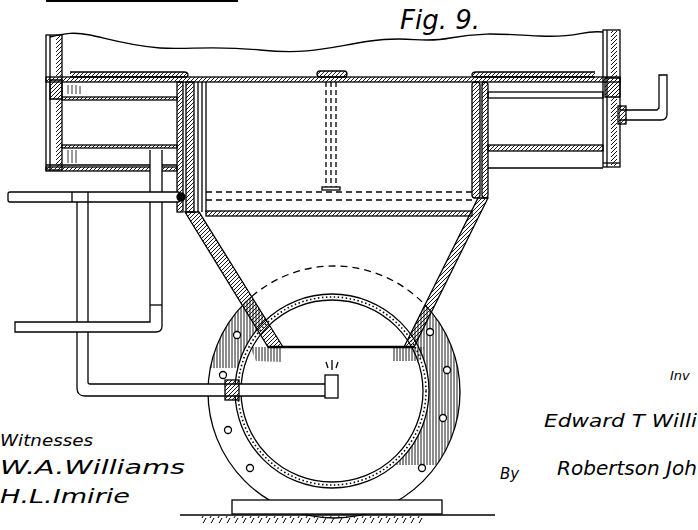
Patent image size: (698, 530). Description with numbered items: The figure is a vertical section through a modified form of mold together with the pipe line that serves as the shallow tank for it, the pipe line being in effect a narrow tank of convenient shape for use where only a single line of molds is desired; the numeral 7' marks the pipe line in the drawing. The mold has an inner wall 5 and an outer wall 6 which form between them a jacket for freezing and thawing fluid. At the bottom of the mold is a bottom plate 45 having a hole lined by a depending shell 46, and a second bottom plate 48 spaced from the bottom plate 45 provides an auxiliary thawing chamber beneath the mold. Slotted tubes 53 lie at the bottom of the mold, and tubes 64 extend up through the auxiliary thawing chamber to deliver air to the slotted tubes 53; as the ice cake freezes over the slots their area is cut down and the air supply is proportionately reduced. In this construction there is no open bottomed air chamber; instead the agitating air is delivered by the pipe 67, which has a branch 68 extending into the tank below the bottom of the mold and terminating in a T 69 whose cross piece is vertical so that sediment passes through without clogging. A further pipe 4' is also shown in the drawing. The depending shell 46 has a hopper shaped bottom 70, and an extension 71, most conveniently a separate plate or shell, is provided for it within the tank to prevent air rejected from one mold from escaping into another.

The pipe 4' is at (100, 241).
The inner wall 5 is at (63, 72).
The outer wall 6 is at (47, 62).
The cylinder flange 7' is at (348, 358).
The bottom plate 45 is at (583, 88).
The depending shell 46 is at (470, 122).
The second bottom plate 48 is at (584, 153).
The slotted tubes 53 is at (191, 72).
The tubes 64 is at (176, 119).
The pipe 67 is at (40, 196).
The branch 68 is at (88, 280).
The T 69 is at (340, 388).
The hopper shaped bottom 70 is at (443, 270).
The extension 71 is at (398, 349).